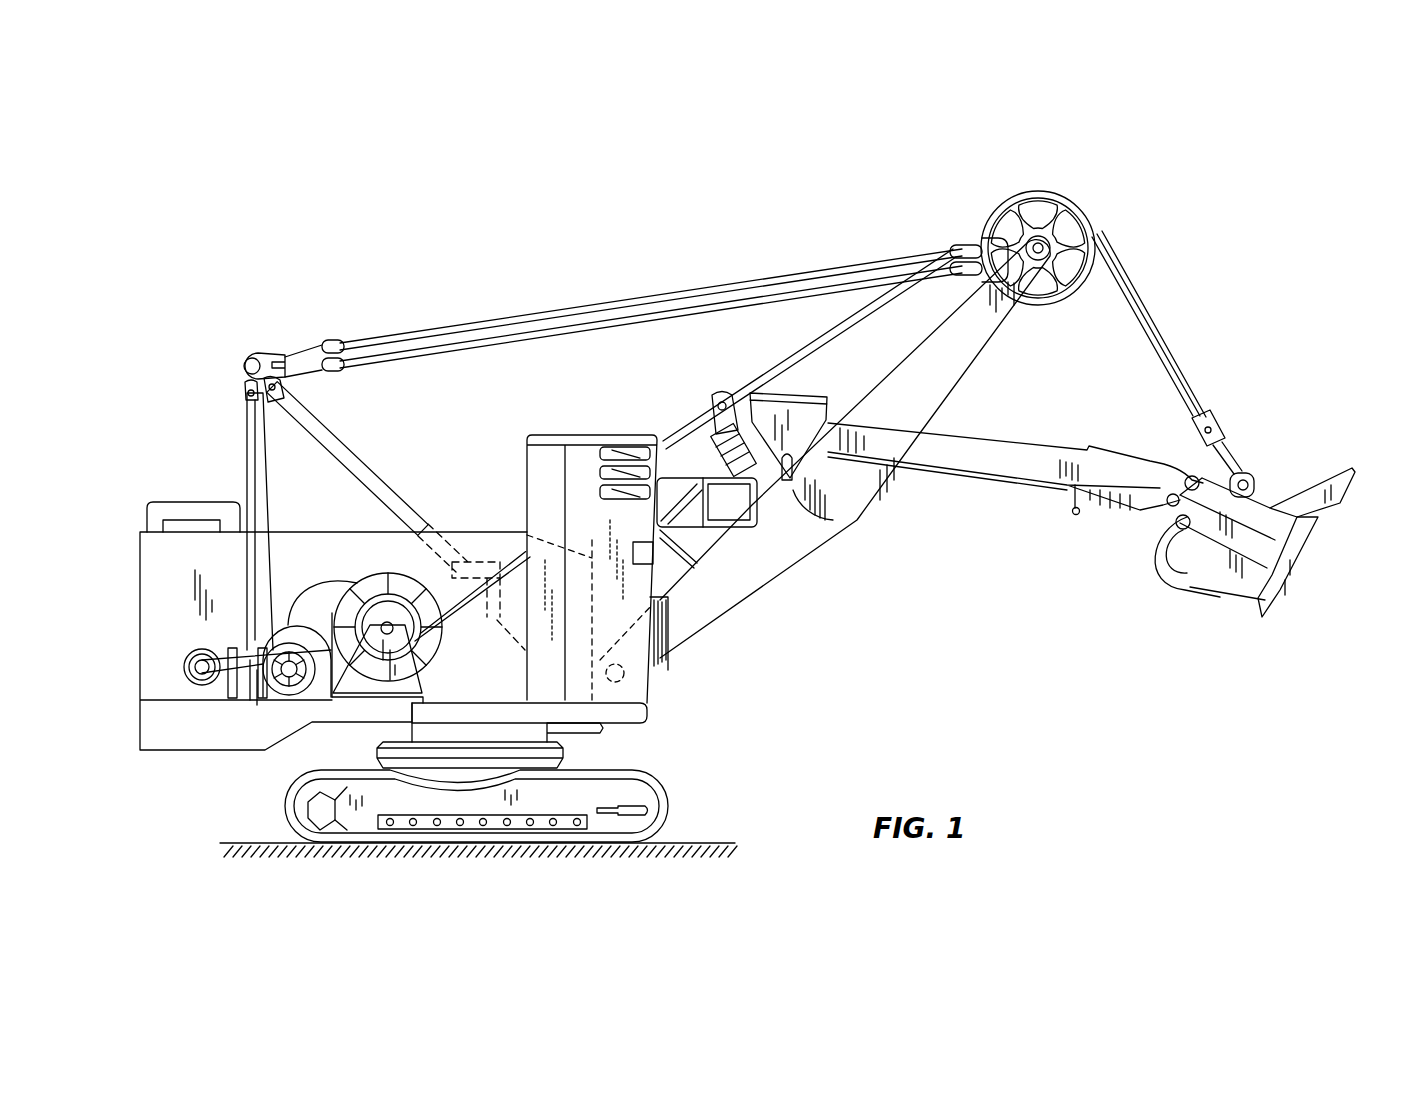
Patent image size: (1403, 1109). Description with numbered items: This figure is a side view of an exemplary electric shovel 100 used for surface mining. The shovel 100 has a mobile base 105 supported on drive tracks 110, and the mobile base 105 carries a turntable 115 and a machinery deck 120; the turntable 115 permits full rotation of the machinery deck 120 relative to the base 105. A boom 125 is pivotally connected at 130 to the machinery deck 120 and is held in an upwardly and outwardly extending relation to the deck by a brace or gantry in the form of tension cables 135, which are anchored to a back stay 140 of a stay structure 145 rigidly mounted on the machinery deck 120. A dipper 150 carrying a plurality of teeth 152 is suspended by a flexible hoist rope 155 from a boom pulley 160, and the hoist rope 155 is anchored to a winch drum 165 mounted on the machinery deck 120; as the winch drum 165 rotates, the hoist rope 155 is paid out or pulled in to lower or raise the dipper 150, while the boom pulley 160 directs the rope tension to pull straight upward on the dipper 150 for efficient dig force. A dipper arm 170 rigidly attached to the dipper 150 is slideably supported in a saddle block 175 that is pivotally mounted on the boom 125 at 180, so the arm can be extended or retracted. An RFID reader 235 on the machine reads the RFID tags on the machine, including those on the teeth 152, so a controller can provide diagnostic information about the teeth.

The electric shovel 100 is at (803, 583).
The mobile base 105 is at (413, 797).
The drive tracks 110 is at (667, 813).
The turntable 115 is at (563, 752).
The machinery deck 120 is at (400, 662).
The boom 125 is at (940, 373).
The pivotal connection 130 is at (635, 677).
The tension cables 135 is at (728, 296).
The back stay 140 is at (252, 444).
The stay structure 145 is at (387, 503).
The dipper 150 is at (1293, 573).
The teeth 152 is at (1352, 503).
The hoist rope 155 is at (1166, 334).
The boom pulley 160 is at (1092, 245).
The winch drum 165 is at (377, 583).
The dipper arm 170 is at (943, 463).
The saddle block 175 is at (800, 413).
The saddle block pivot 180 is at (817, 503).
The RFID reader 235 is at (653, 600).